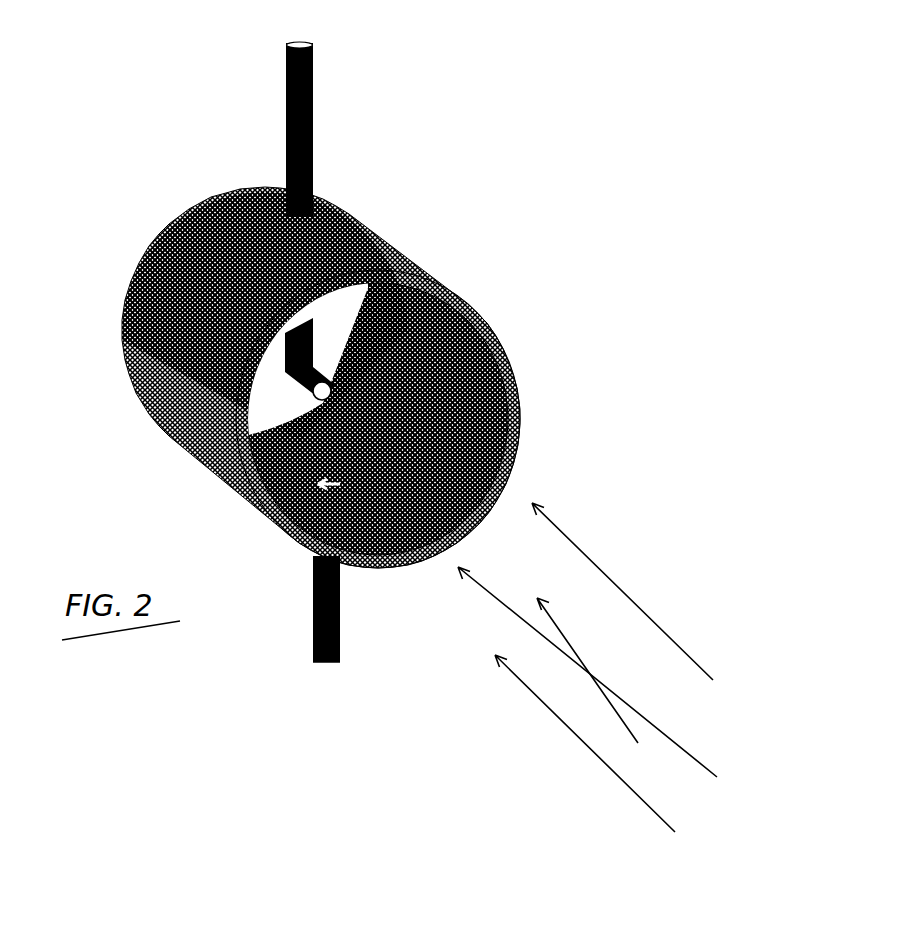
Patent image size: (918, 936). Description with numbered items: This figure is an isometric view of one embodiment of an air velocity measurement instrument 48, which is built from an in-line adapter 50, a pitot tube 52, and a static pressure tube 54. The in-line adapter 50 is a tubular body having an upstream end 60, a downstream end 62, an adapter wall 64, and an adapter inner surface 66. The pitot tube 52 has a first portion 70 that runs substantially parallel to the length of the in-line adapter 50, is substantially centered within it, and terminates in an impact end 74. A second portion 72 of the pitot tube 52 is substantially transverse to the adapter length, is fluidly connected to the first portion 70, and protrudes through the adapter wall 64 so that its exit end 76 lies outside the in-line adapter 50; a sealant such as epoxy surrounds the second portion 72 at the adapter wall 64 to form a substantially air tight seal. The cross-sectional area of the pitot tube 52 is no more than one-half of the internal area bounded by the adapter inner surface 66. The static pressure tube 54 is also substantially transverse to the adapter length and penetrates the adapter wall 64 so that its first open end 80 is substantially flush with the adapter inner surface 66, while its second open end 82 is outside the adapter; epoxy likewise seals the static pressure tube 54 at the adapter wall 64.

The air velocity measurement instrument 48 is at (562, 102).
The in-line adapter 50 is at (405, 263).
The pitot tube 52 is at (316, 140).
The static pressure tube 54 is at (342, 616).
The upstream end 60 is at (514, 410).
The downstream end 62 is at (131, 283).
The adapter wall 64 is at (497, 334).
The adapter inner surface 66 is at (405, 482).
The first portion 70 is at (316, 343).
The second portion 72 is at (314, 88).
The impact end 74 is at (312, 392).
The exit end 76 is at (300, 42).
The first open end 80 is at (342, 484).
The second open end 82 is at (340, 661).